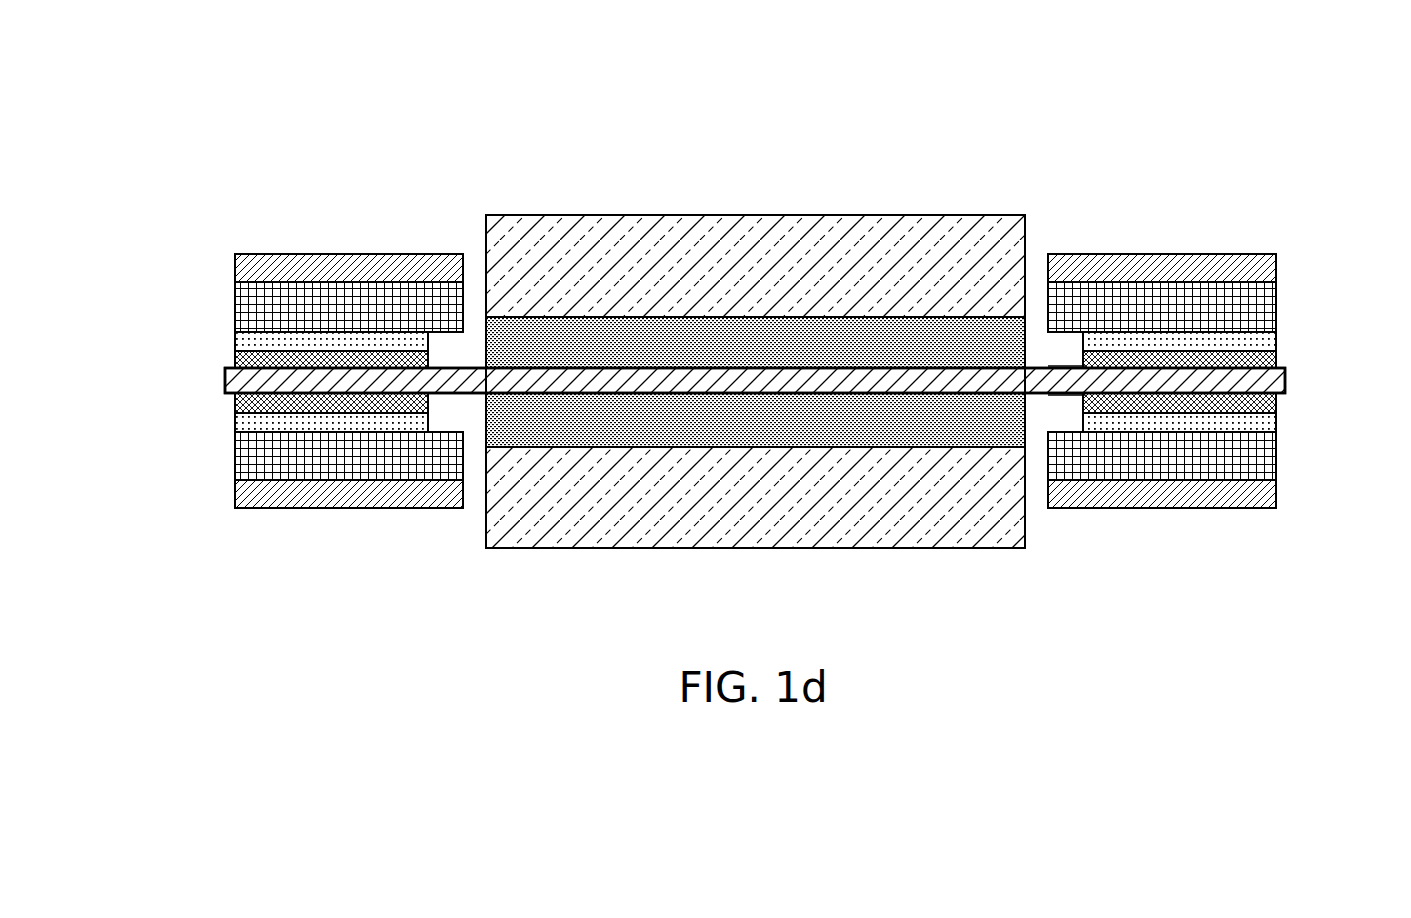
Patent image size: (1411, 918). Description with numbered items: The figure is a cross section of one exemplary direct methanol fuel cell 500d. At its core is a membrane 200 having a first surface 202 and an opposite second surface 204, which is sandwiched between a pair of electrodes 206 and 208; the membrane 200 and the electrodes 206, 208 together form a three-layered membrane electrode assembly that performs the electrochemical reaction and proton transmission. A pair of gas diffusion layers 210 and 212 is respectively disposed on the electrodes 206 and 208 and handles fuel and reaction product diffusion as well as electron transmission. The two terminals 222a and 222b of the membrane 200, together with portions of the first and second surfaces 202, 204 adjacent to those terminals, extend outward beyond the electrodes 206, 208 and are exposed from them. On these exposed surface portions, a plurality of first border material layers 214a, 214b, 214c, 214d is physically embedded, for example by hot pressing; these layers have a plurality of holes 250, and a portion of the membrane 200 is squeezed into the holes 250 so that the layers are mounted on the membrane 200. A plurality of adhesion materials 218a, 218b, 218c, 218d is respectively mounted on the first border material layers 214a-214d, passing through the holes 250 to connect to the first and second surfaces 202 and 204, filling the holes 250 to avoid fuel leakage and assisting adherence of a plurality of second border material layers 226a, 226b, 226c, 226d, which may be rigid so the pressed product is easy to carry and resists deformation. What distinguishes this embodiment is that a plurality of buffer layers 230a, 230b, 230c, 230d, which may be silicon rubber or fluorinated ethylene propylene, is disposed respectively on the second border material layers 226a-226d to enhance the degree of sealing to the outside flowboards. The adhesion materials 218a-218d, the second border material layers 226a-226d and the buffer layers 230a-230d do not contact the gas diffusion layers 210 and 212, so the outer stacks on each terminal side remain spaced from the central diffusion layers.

The direct methanol fuel cell 500d is at (339, 121).
The membrane 200 is at (940, 380).
The first surface 202 is at (1060, 366).
The second surface 204 is at (1060, 396).
The electrode 206 is at (577, 330).
The electrode 208 is at (571, 433).
The gas diffusion layer 210 is at (758, 235).
The gas diffusion layer 212 is at (750, 532).
The first border material layer 214a is at (236, 359).
The first border material layer 214b is at (1274, 359).
The first border material layer 214c is at (236, 403).
The first border material layer 214d is at (1274, 403).
The adhesion material 218a is at (236, 341).
The adhesion material 218b is at (1274, 341).
The adhesion material 218c is at (236, 422).
The adhesion material 218d is at (1274, 422).
The terminal 222a is at (226, 381).
The terminal 222b is at (1287, 381).
The second border material layer 226a is at (236, 305).
The second border material layer 226b is at (1274, 305).
The second border material layer 226c is at (236, 456).
The second border material layer 226d is at (1274, 456).
The buffer layer 230a is at (236, 268).
The buffer layer 230b is at (1274, 268).
The buffer layer 230c is at (236, 494).
The buffer layer 230d is at (1274, 494).
The hole 250 is at (333, 358).